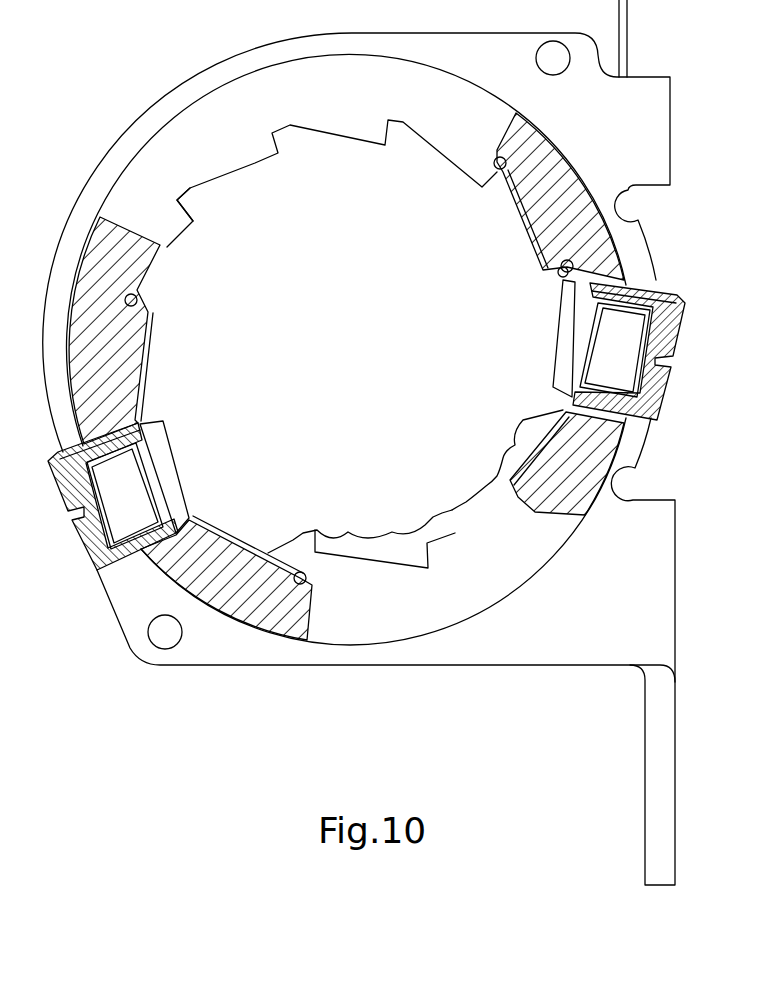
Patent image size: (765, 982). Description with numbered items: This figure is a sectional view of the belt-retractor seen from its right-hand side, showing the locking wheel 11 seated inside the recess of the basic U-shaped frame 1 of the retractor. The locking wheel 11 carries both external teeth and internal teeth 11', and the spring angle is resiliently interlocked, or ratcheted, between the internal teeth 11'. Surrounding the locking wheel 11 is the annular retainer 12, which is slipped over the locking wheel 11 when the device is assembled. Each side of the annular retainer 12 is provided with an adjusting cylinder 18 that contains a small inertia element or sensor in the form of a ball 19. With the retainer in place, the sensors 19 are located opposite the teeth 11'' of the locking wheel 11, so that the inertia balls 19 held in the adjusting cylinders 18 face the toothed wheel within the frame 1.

The frame 1 is at (362, 655).
The locking wheel 11 is at (365, 421).
The internal teeth 11' is at (360, 504).
The teeth 11'' is at (333, 252).
The annular retainer 12 is at (570, 470).
The adjusting cylinders 18 is at (127, 548).
The balls 19 is at (112, 513).